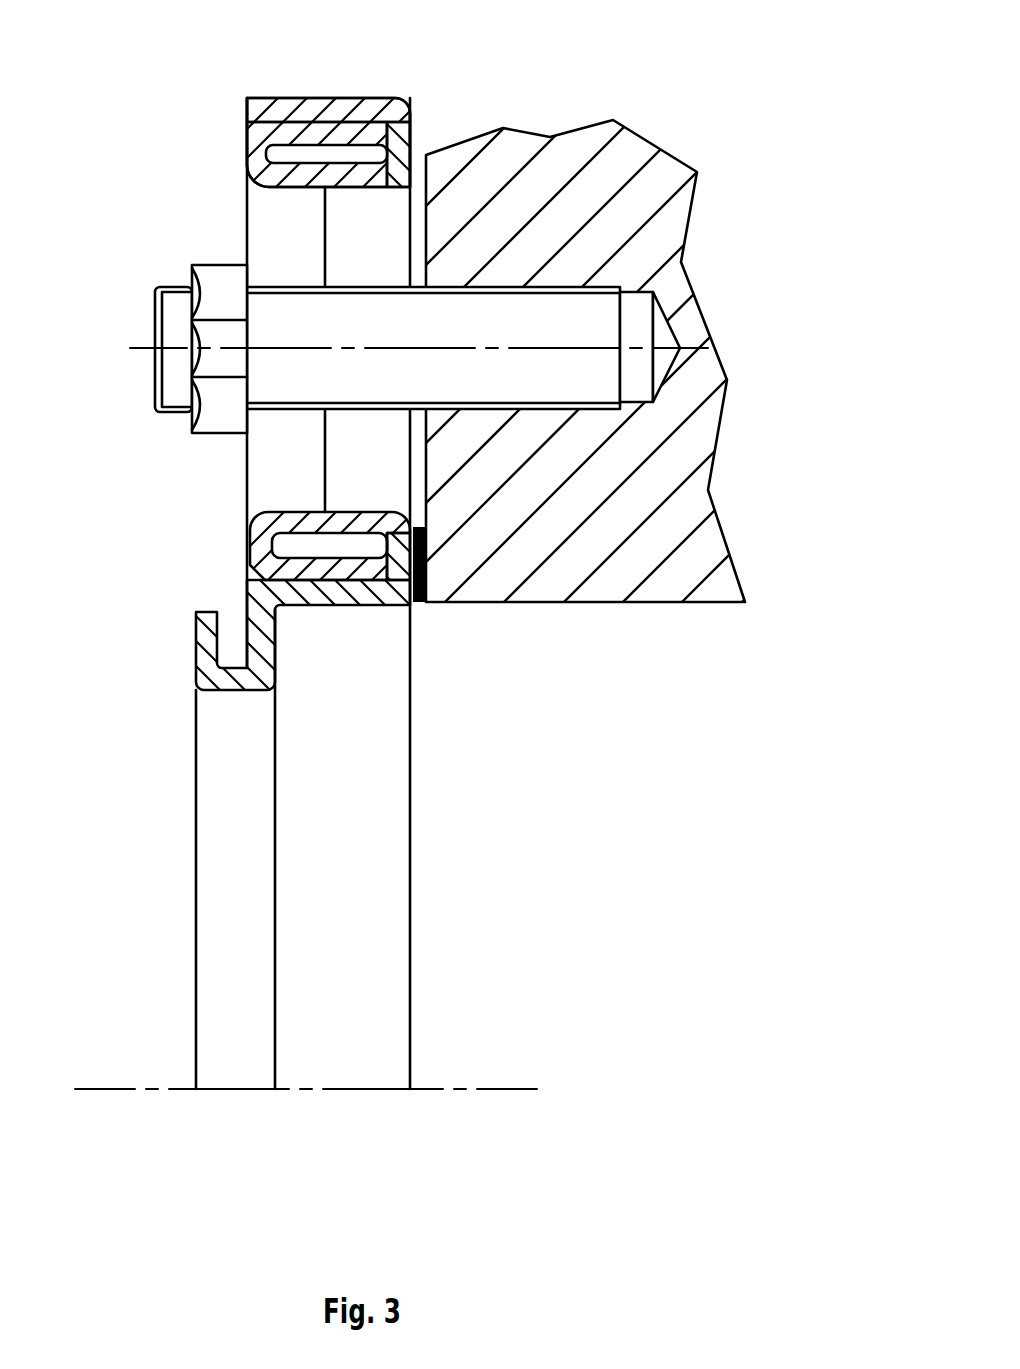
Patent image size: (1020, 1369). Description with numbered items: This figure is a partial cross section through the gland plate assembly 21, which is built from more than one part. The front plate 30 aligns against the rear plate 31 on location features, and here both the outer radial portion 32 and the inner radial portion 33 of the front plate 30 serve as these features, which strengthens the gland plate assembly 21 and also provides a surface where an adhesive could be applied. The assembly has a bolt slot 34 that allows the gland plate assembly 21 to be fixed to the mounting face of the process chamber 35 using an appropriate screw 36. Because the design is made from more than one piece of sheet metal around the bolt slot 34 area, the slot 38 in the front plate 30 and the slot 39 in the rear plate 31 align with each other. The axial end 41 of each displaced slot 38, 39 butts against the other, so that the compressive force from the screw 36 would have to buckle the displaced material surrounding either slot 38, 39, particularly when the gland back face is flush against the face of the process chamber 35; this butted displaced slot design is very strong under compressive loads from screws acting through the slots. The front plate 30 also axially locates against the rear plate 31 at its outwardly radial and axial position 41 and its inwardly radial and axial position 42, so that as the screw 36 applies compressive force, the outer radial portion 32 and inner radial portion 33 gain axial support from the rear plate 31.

The gland plate assembly 21 is at (410, 97).
The front plate 30 is at (253, 548).
The rear plate 31 is at (403, 624).
The outer radial portion 32 is at (320, 115).
The inner radial portion 33 is at (302, 834).
The bolt slot 34 is at (270, 223).
The process chamber 35 is at (426, 245).
The screw 36 is at (205, 277).
The slot 38 is at (298, 172).
The slot 39 is at (343, 175).
The axial end 41 is at (378, 118).
The inwardly radial and axial position 42 is at (416, 836).